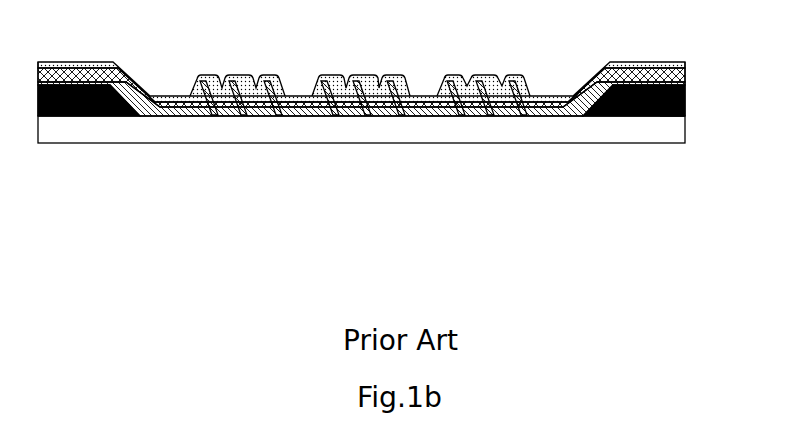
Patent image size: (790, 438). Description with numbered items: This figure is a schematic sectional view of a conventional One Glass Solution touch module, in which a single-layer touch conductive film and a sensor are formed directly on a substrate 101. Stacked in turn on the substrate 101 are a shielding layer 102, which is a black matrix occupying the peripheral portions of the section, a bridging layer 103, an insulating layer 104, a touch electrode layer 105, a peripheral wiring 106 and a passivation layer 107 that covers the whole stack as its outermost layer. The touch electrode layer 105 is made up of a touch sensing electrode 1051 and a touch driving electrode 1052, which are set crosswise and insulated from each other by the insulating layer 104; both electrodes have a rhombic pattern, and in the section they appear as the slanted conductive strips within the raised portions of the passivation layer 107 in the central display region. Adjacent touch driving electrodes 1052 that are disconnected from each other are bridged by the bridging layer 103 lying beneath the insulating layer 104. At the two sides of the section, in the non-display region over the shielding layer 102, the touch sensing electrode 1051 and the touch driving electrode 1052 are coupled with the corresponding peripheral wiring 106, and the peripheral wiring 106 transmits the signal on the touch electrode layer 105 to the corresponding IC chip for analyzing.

The substrate 101 is at (123, 133).
The shielding layer 102 is at (658, 117).
The bridging layer 103 is at (236, 103).
The insulating layer 104 is at (365, 108).
The touch electrode layer 105 is at (399, 171).
The touch sensing electrode 1051 is at (487, 108).
The touch driving electrode 1052 is at (507, 95).
The peripheral wiring 106 is at (637, 72).
The passivation layer 107 is at (550, 97).